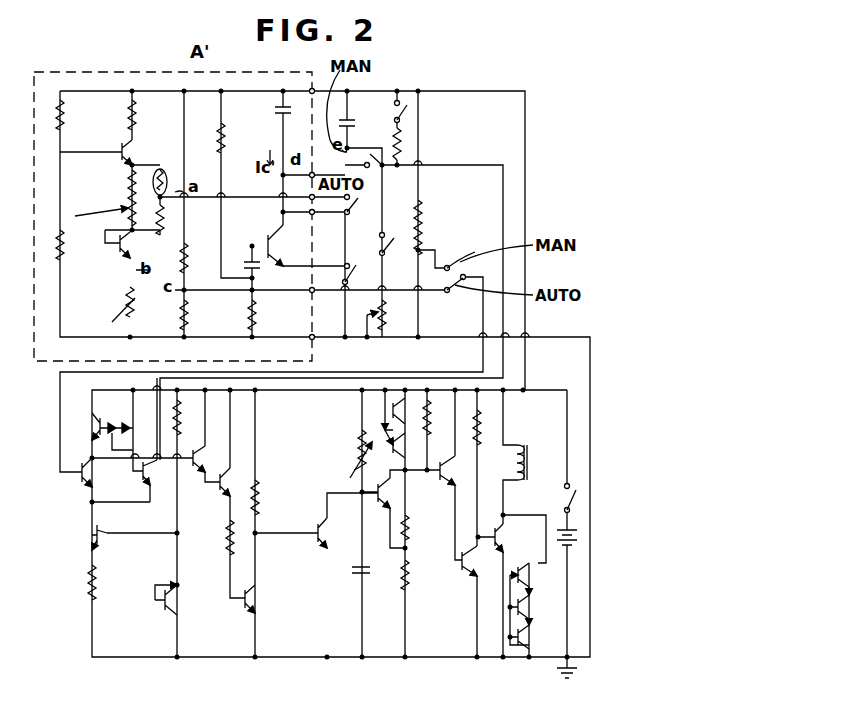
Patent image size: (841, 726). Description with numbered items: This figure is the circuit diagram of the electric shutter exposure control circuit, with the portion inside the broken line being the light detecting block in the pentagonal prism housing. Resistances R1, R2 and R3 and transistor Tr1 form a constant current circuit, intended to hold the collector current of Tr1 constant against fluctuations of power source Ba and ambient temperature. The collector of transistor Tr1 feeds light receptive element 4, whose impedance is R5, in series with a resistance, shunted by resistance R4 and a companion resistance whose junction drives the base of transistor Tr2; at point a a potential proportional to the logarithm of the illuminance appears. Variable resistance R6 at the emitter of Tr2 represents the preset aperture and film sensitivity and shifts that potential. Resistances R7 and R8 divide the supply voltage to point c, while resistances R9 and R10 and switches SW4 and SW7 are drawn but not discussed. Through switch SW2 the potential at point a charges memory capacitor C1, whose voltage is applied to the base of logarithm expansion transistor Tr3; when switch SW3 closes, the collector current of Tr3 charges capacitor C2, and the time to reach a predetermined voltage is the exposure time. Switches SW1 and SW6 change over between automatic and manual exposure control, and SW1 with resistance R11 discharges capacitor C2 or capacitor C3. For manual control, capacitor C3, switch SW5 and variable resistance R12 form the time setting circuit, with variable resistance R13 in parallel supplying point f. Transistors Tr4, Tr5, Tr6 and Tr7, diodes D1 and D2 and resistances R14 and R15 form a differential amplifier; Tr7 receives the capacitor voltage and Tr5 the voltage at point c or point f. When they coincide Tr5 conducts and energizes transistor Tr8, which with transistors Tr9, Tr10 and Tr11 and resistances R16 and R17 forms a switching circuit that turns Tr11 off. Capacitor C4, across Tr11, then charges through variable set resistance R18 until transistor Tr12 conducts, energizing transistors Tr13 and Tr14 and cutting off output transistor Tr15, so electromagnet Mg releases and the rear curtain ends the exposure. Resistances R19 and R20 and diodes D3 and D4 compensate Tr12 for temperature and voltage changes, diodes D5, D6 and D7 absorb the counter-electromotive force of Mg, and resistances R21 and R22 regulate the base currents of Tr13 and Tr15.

The resistance R1 is at (66, 122).
The resistance R2 is at (68, 242).
The resistance R3 is at (138, 124).
The resistance R4 is at (99, 198).
The light receptive impedance R5 is at (165, 180).
The variable resistance R6 is at (126, 306).
The resistance R7 is at (188, 262).
The resistance R8 is at (188, 315).
The resistor R9 is at (230, 148).
The resistor R10 is at (255, 315).
The resistance R11 is at (402, 142).
The variable resistance R12 is at (390, 312).
The variable resistance R13 is at (420, 216).
The resistance R14 is at (90, 586).
The resistance R15 is at (182, 420).
The resistance R16 is at (226, 536).
The resistance R17 is at (260, 490).
The variable set resistance R18 is at (357, 442).
The resistance R19 is at (405, 528).
The resistance R20 is at (404, 577).
The resistance R21 is at (432, 415).
The resistance R22 is at (482, 440).
The transistor Tr1 is at (124, 155).
The transistor Tr2 is at (120, 252).
The logarithm expansion transistor Tr3 is at (280, 252).
The transistor Tr4 is at (98, 433).
The transistor Tr5 is at (84, 482).
The transistor Tr6 is at (96, 540).
The transistor Tr7 is at (147, 481).
The transistor Tr8 is at (200, 460).
The transistor Tr9 is at (222, 488).
The transistor Tr10 is at (252, 600).
The transistor Tr11 is at (318, 534).
The transistor Tr12 is at (377, 492).
The transistor Tr13 is at (441, 482).
The transistor Tr14 is at (464, 572).
The output transistor Tr15 is at (499, 536).
The memory capacitor C1 is at (260, 268).
The capacitor C2 is at (275, 112).
The capacitor C3 is at (352, 115).
The capacitor C4 is at (368, 572).
The diode D1 is at (127, 420).
The diode D2 is at (162, 594).
The diode D3 is at (395, 412).
The diode D4 is at (393, 450).
The diode D5 is at (530, 572).
The diode D6 is at (530, 602).
The diode D7 is at (530, 632).
The change-over switch SW1 is at (372, 170).
The switch SW2 is at (358, 200).
The switch SW3 is at (356, 270).
The switch SW4 is at (403, 110).
The switch SW5 is at (410, 258).
The change-over switch SW6 is at (470, 282).
The switch SW7 is at (574, 497).
The electromagnet Mg is at (538, 462).
The power source Ba is at (578, 537).
The light receptive element 4 is at (163, 178).